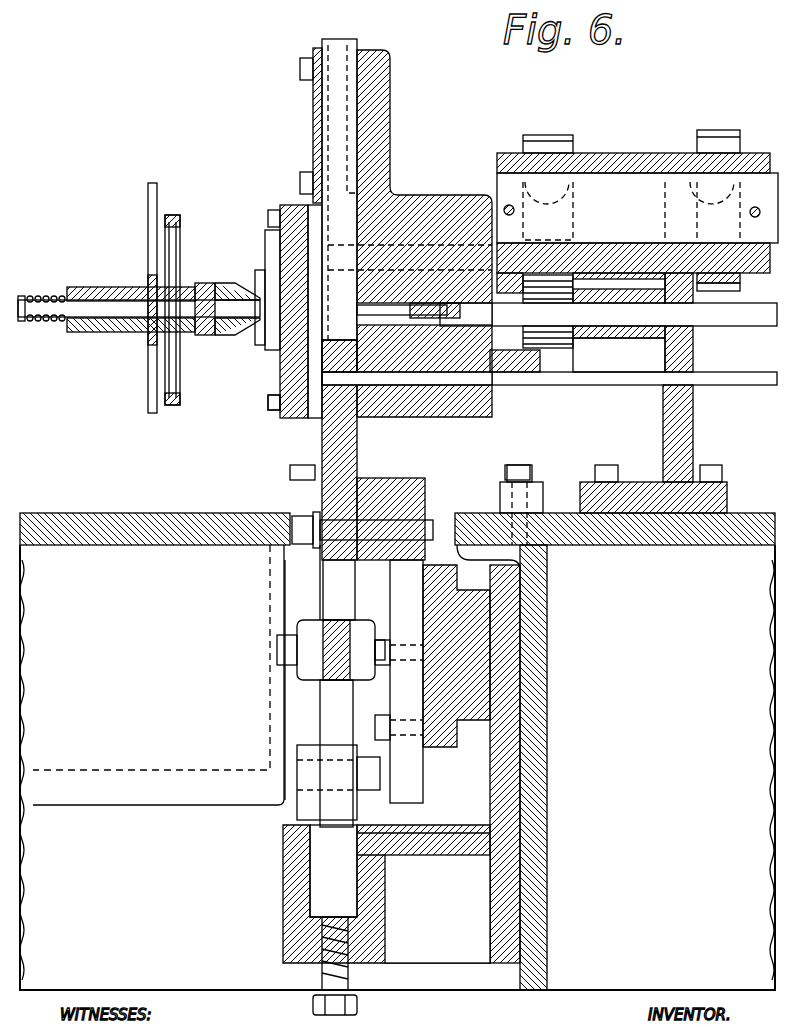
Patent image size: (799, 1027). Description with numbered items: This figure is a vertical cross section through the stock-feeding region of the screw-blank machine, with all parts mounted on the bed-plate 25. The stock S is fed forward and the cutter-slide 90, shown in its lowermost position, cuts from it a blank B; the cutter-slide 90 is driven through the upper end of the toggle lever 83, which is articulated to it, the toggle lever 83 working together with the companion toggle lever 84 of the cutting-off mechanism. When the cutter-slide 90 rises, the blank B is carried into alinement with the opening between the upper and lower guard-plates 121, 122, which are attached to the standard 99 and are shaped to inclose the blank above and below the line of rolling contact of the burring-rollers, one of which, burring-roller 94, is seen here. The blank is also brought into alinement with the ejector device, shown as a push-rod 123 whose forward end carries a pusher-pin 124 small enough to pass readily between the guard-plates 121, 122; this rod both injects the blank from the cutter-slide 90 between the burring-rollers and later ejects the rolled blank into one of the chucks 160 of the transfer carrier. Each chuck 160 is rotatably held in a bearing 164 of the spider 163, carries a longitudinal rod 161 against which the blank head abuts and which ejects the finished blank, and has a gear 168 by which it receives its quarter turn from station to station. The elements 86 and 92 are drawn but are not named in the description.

The bed-plate 25 is at (546, 887).
The toggle lever 83 is at (325, 597).
The toggle lever 84 is at (332, 702).
The adjusting block 86 is at (345, 891).
The cutter-slide 90 is at (357, 442).
The plate 92 is at (333, 363).
The burring-roller 94 is at (270, 244).
The standard 99 is at (428, 200).
The guard-plate 121 is at (300, 210).
The guard-plate 122 is at (283, 410).
The push-rod 123 is at (720, 322).
The pusher-pin 124 is at (446, 318).
The chuck 160 is at (216, 276).
The longitudinal rod 161 is at (77, 305).
The spider 163 is at (150, 403).
The bearing 164 is at (103, 285).
The gear 168 is at (177, 215).
The blank B is at (323, 377).
The stock S is at (623, 386).